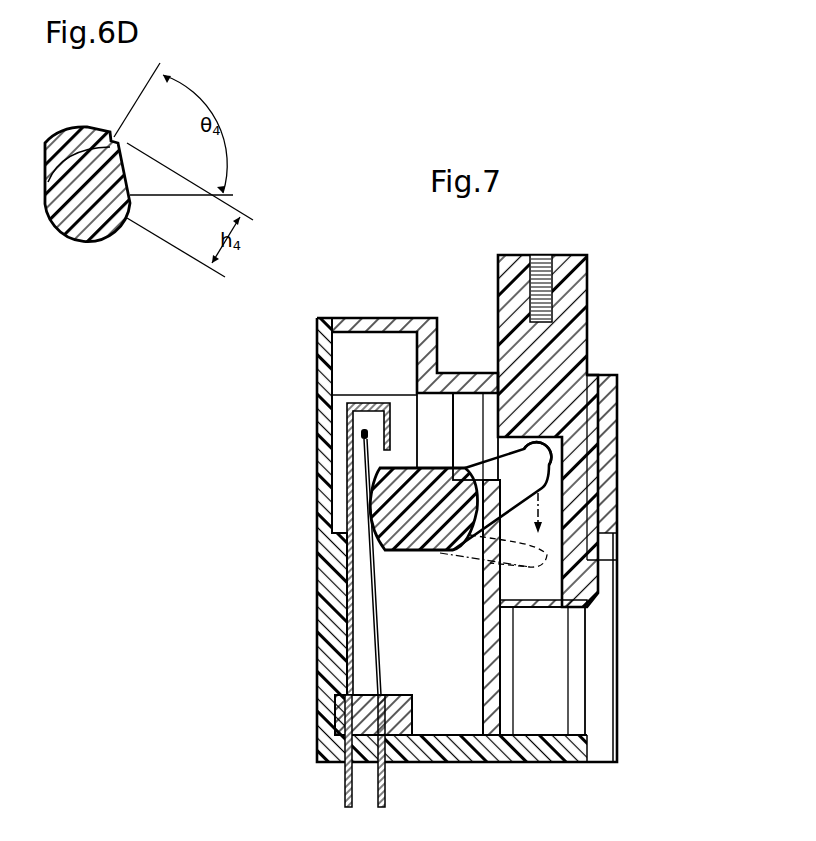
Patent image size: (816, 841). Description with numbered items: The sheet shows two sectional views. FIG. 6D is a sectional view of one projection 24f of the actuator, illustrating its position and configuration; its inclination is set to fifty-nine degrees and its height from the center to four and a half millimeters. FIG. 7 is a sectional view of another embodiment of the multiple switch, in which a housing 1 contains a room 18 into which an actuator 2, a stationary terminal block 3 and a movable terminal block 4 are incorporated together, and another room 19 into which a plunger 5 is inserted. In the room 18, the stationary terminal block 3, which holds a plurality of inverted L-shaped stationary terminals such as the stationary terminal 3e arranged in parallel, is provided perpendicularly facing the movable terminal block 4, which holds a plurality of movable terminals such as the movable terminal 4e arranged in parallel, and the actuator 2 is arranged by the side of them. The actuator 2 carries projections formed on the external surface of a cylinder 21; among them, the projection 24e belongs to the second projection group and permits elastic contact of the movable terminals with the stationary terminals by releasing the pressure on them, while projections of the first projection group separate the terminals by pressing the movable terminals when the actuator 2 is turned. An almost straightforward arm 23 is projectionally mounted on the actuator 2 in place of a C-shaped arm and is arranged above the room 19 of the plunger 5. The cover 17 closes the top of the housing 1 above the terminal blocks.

In FIG. 6D, the projection 24f is at (114, 137).
In FIG. 7, the housing 1 is at (317, 575).
In FIG. 7, the cover 17 is at (350, 318).
In FIG. 7, the plunger 5 is at (587, 300).
In FIG. 7, the room 18 is at (445, 423).
In FIG. 7, the projection 24e is at (362, 517).
In FIG. 7, the arm 23 is at (550, 470).
In FIG. 7, the room 19 is at (547, 515).
In FIG. 7, the stationary terminal 3e is at (373, 403).
In FIG. 7, the movable terminal 4e is at (360, 437).
In FIG. 7, the actuator 2 is at (420, 552).
In FIG. 7, the cylinder 21 is at (437, 533).
In FIG. 7, the stationary terminal block 3 is at (335, 710).
In FIG. 7, the movable terminal block 4 is at (390, 715).